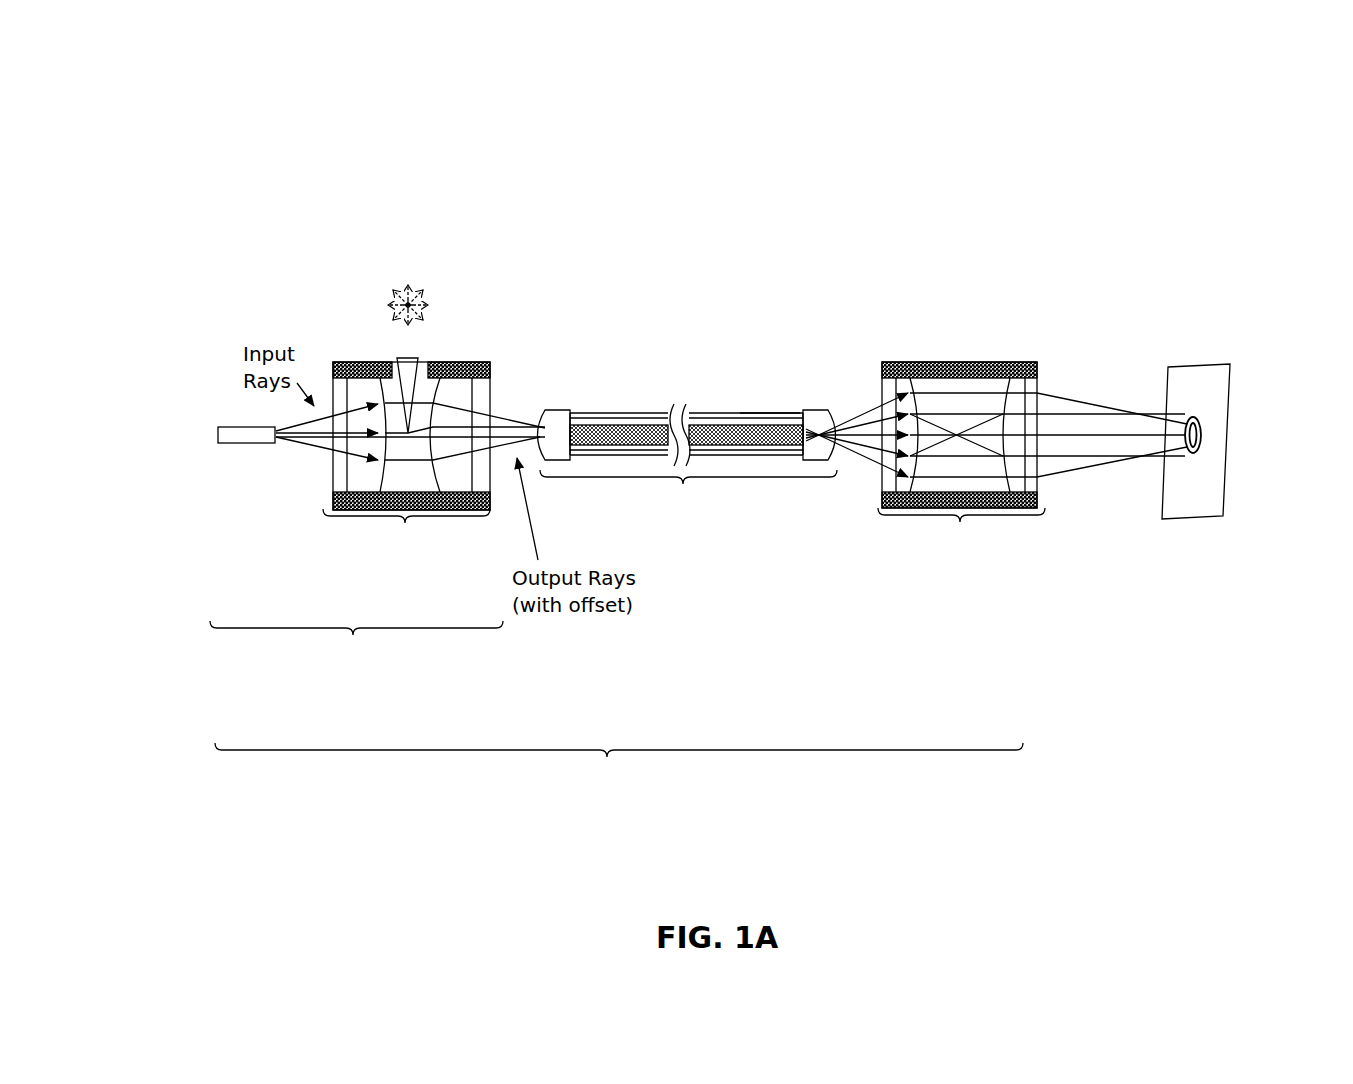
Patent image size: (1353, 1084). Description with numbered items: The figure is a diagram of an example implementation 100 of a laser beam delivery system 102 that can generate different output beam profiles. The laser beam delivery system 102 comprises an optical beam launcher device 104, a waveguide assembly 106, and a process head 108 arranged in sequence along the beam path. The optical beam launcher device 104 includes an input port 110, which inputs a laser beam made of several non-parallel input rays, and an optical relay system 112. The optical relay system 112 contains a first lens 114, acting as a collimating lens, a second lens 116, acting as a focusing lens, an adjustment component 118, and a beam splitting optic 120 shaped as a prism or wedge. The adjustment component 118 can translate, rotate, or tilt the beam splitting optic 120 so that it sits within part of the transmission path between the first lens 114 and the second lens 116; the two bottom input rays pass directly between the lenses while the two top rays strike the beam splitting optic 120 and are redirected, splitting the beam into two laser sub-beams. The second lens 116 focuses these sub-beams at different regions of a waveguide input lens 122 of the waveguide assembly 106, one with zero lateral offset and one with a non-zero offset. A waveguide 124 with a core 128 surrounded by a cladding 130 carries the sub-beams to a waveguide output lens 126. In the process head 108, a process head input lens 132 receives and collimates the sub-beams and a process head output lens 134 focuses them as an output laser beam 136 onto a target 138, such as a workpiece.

The example implementation 100 is at (256, 66).
The laser beam delivery system 102 is at (606, 770).
The optical beam launcher device 104 is at (353, 645).
The waveguide assembly 106 is at (683, 494).
The process head 108 is at (960, 490).
The input port 110 is at (249, 449).
The optical relay system 112 is at (394, 462).
The first lens 114 is at (358, 480).
The second lens 116 is at (459, 480).
The adjustment component 118 is at (409, 266).
The beam splitting optic 120 is at (396, 355).
The waveguide input lens 122 is at (558, 467).
The waveguide 124 is at (614, 410).
The waveguide output lens 126 is at (811, 470).
The core 128 is at (719, 425).
The cladding 130 is at (765, 412).
The process head input lens 132 is at (905, 487).
The process head output lens 134 is at (1016, 487).
The output laser beam 136 is at (1207, 436).
The target 138 is at (1195, 499).